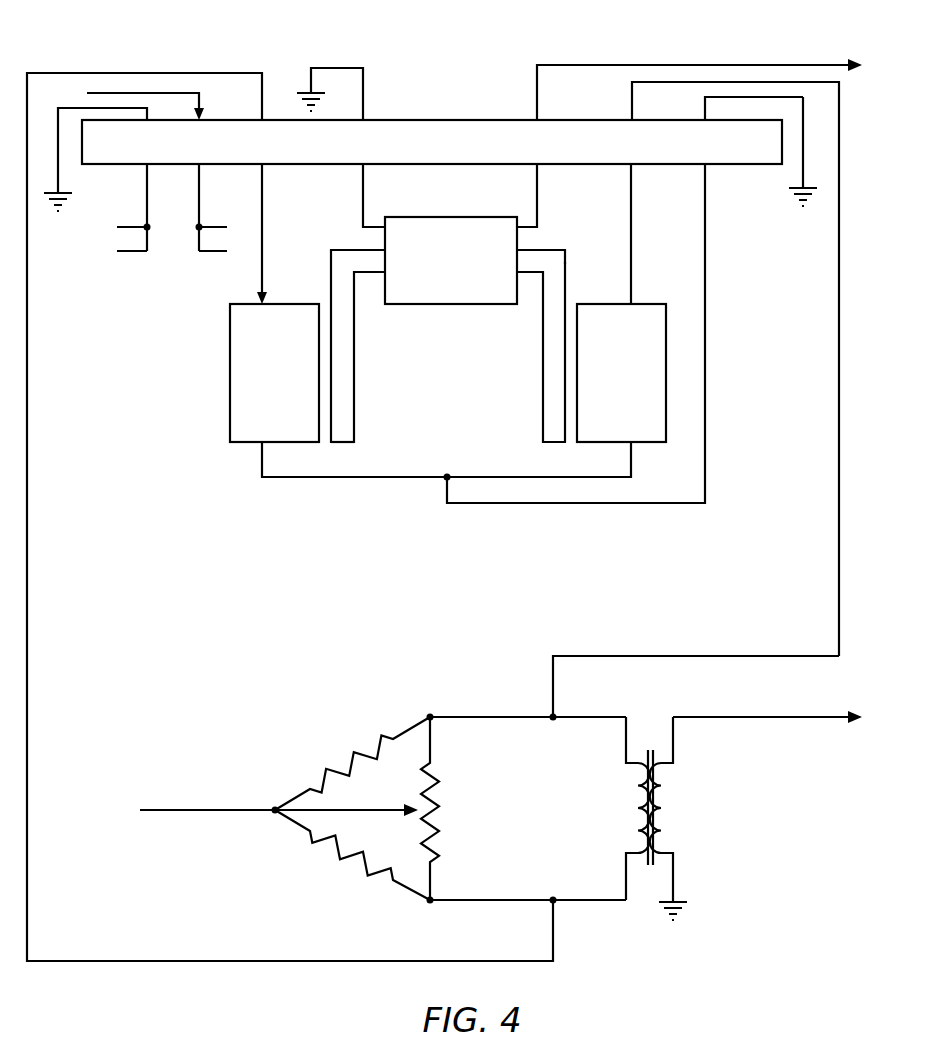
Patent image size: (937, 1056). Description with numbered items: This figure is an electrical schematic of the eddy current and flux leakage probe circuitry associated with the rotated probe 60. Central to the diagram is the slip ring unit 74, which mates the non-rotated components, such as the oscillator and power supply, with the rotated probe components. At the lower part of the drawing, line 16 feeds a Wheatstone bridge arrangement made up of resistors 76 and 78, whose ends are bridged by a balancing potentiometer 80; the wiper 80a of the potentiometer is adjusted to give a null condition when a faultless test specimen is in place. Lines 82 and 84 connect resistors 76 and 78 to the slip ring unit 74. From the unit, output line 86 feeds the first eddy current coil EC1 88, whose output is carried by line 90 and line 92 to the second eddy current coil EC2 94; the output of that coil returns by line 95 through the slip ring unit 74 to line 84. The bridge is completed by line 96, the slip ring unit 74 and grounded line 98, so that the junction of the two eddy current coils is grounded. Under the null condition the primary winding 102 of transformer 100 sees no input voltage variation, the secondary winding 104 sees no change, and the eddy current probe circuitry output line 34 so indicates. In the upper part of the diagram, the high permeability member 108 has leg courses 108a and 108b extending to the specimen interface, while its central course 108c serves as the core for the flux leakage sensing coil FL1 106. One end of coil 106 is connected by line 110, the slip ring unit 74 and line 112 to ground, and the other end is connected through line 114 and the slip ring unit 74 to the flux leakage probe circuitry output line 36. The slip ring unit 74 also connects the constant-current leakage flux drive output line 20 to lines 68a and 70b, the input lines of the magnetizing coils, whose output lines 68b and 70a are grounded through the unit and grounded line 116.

The line 16 is at (200, 810).
The leakage flux drive output line 20 is at (140, 93).
The eddy current probe circuitry output line 34 is at (775, 717).
The flux leakage probe circuitry output line 36 is at (763, 65).
The probe 60 is at (234, 469).
The line 68a is at (215, 226).
The line 68b is at (130, 226).
The line 70a is at (135, 251).
The line 70b is at (210, 251).
The slip ring unit 74 is at (748, 150).
The resistor 76 is at (350, 757).
The resistor 78 is at (357, 865).
The balancing potentiometer 80 is at (437, 793).
The wiper 80a is at (348, 810).
The line 82 is at (215, 961).
The line 84 is at (690, 656).
The output line 86 is at (262, 213).
The first eddy current coil 88 is at (230, 388).
The line 90 is at (362, 477).
The line 92 is at (527, 477).
The second eddy current coil 94 is at (643, 427).
The line 95 is at (632, 243).
The line 96 is at (705, 338).
The grounded line 98 is at (803, 155).
The transformer 100 is at (650, 872).
The primary winding 102 is at (630, 795).
The secondary winding 104 is at (673, 795).
The flux leakage sensing coil 106 is at (482, 304).
The high permeability member 108 is at (370, 416).
The leg course 108a is at (347, 357).
The leg course 108b is at (543, 337).
The central course 108c is at (535, 243).
The line 110 is at (363, 198).
The line 112 is at (363, 85).
The line 114 is at (537, 198).
The grounded line 116 is at (63, 108).